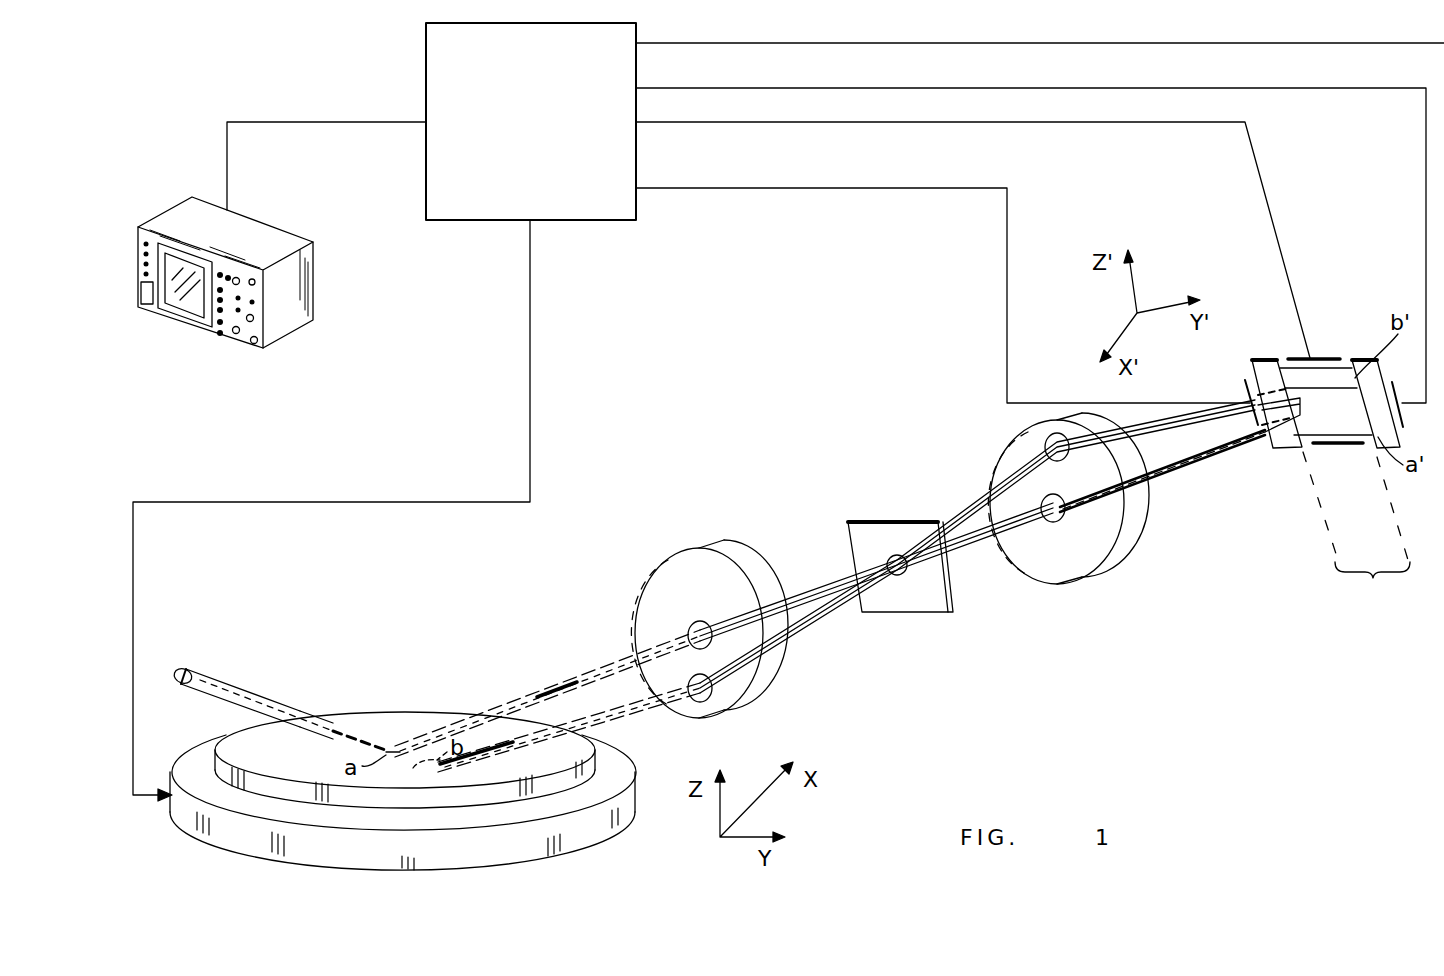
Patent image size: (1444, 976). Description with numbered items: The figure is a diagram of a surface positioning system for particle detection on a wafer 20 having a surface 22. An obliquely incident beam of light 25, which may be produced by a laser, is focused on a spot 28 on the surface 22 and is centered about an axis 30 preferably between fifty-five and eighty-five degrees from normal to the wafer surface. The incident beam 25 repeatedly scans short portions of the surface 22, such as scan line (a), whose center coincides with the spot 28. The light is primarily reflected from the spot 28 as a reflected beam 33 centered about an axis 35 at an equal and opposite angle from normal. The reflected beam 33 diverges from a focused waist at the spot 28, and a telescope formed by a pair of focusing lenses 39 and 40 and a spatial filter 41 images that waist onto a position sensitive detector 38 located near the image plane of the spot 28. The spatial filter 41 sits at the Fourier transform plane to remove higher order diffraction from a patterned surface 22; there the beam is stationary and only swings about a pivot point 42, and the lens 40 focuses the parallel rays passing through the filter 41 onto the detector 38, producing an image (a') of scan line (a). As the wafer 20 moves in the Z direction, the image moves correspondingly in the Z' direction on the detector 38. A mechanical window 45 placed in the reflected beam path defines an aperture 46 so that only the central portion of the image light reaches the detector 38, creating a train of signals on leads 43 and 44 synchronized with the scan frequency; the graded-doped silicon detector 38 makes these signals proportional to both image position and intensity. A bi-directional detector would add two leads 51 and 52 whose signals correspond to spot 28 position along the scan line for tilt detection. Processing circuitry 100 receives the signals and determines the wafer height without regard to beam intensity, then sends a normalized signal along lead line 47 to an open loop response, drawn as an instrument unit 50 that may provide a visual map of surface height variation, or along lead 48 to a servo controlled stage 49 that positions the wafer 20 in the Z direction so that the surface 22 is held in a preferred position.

The processing circuitry 100 is at (426, 45).
The wafer 20 is at (594, 757).
The surface 22 is at (292, 760).
The incident beam of light 25 is at (215, 675).
The spot 28 is at (393, 752).
The axis 30 is at (192, 690).
The reflected beam 33 is at (578, 683).
The axis 35 is at (614, 665).
The position sensitive detector 38 is at (1298, 380).
The focusing lens 39 is at (720, 549).
The focusing lens 40 is at (1010, 440).
The spatial filter 41 is at (848, 540).
The pivot point 42 is at (898, 575).
The lead 43 is at (723, 122).
The lead 44 is at (1388, 43).
The mechanical window 45 is at (1270, 358).
The aperture 46 is at (1372, 583).
The lead line 47 is at (227, 142).
The lead 48 is at (388, 502).
The servo controlled stage 49 is at (182, 813).
The display / control unit 50 is at (313, 278).
The lead 51 is at (723, 188).
The lead 52 is at (1388, 88).